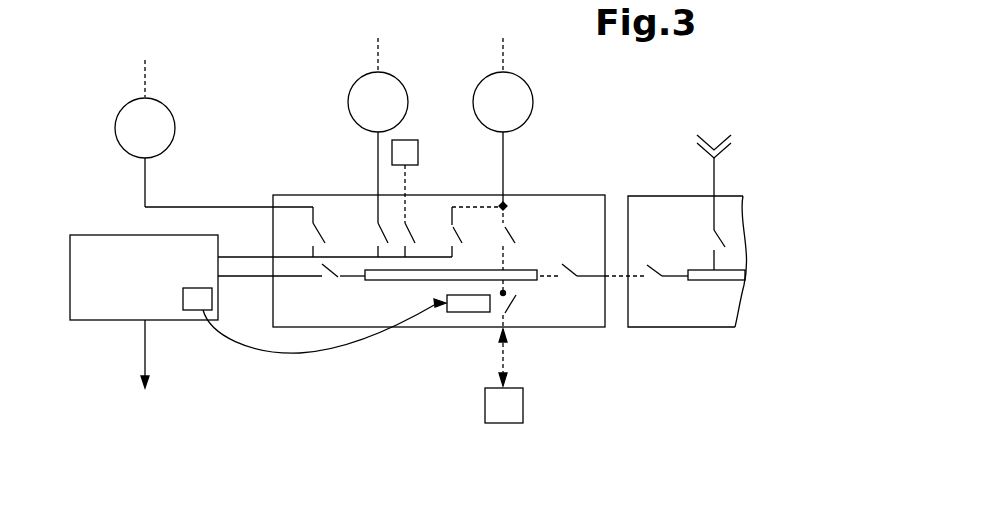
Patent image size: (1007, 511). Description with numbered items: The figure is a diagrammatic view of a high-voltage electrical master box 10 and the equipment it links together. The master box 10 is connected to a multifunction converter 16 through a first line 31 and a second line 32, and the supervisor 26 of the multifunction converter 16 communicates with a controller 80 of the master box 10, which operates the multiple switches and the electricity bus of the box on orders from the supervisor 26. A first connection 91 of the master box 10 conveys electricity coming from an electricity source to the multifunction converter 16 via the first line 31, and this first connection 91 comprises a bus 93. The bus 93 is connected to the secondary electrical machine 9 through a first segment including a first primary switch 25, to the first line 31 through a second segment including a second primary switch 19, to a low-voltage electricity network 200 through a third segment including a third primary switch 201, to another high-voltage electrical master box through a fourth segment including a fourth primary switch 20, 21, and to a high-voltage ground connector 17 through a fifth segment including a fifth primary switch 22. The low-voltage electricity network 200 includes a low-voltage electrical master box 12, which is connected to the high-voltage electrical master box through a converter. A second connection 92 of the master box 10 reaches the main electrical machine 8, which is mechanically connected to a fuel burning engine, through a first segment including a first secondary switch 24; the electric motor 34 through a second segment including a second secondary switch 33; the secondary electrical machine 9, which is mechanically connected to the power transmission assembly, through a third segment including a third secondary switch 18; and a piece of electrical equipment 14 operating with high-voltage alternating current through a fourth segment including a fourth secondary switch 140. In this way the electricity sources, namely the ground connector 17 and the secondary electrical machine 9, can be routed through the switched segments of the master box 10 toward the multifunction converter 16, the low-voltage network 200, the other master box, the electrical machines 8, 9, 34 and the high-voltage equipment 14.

The main electrical machine 8 is at (139, 138).
The secondary electrical machine 9 is at (497, 114).
The electric motor 34 is at (366, 114).
The high-voltage electrical master box 10 is at (580, 195).
The low-voltage electrical master box 12 is at (133, 421).
The piece of electrical equipment 14 is at (418, 148).
The fourth secondary switch 140 is at (415, 218).
The multifunction converter 16 is at (133, 287).
The high-voltage ground connector 17 is at (701, 127).
The third secondary switch 18 is at (452, 229).
The second primary switch 19 is at (335, 279).
The fourth primary switch 20 is at (570, 274).
The fourth primary switch 21 is at (656, 276).
The fifth primary switch 22 is at (713, 239).
The first secondary switch 24 is at (318, 233).
The first primary switch 25 is at (513, 228).
The supervisor 26 is at (183, 300).
The first line 31 is at (247, 280).
The second line 32 is at (232, 257).
The second secondary switch 33 is at (377, 230).
The controller 80 is at (455, 312).
The first connection 91 is at (287, 306).
The second connection 92 is at (329, 226).
The bus 93 is at (530, 280).
The low-voltage electricity network 200 is at (508, 423).
The third primary switch 201 is at (514, 299).